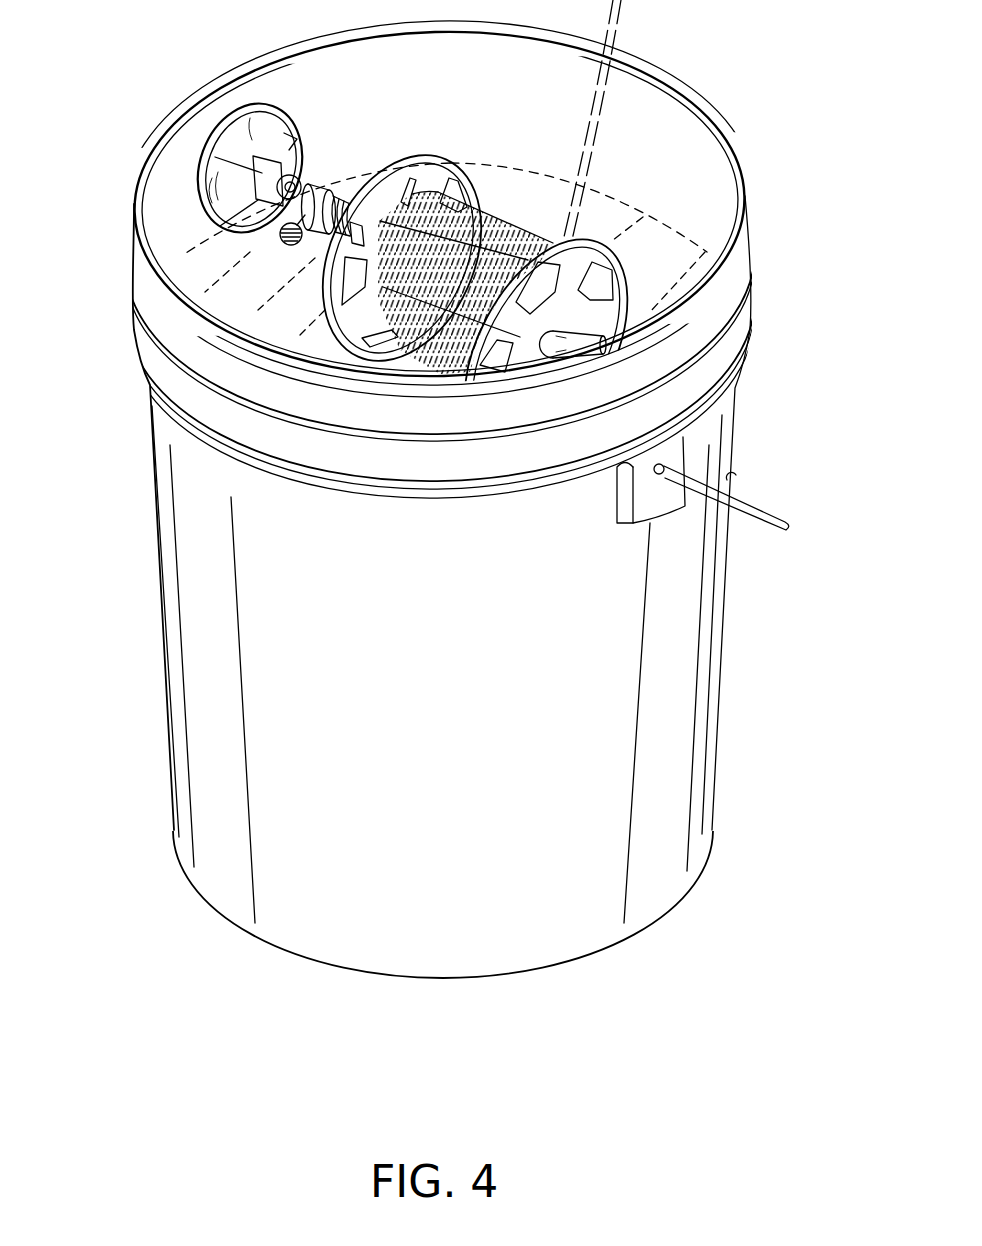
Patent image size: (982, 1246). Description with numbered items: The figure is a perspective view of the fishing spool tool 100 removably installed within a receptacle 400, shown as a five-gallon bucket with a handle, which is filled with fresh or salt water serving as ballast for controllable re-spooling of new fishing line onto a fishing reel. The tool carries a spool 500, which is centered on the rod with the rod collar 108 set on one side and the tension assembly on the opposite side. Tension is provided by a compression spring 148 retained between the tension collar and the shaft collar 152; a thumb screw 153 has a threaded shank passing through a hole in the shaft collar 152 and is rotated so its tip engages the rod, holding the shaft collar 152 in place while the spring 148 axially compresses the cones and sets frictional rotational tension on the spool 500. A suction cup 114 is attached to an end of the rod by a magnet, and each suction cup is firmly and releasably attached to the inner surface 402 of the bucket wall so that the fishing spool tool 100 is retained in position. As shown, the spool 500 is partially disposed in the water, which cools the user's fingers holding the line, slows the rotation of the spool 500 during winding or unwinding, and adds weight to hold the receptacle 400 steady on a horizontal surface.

The fishing spool tool 100 is at (596, 212).
The rod collar 108 is at (588, 343).
The suction cup 114 is at (234, 115).
The spring 148 is at (350, 205).
The shaft collar 152 is at (324, 183).
The thumb screw 153 is at (282, 236).
The receptacle 400 is at (520, 594).
The inner surface 402 is at (156, 196).
The spool 500 is at (489, 198).